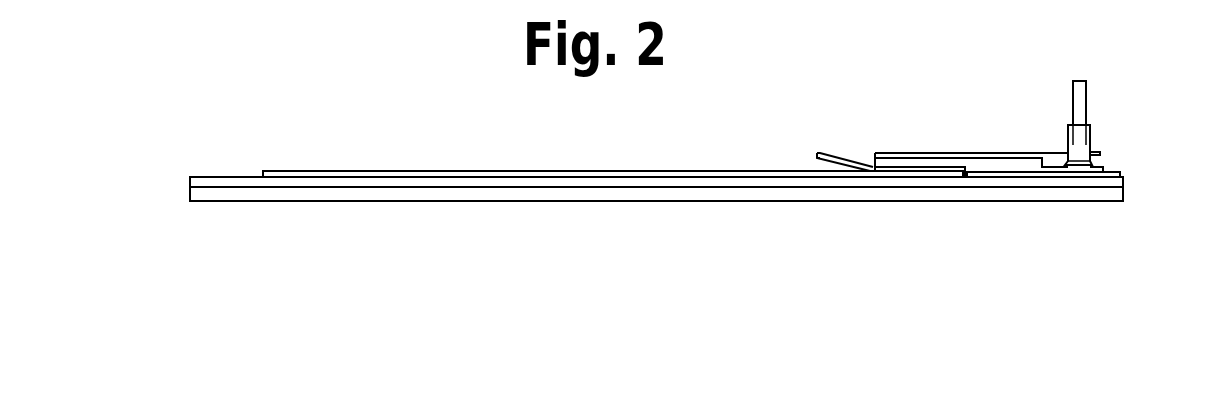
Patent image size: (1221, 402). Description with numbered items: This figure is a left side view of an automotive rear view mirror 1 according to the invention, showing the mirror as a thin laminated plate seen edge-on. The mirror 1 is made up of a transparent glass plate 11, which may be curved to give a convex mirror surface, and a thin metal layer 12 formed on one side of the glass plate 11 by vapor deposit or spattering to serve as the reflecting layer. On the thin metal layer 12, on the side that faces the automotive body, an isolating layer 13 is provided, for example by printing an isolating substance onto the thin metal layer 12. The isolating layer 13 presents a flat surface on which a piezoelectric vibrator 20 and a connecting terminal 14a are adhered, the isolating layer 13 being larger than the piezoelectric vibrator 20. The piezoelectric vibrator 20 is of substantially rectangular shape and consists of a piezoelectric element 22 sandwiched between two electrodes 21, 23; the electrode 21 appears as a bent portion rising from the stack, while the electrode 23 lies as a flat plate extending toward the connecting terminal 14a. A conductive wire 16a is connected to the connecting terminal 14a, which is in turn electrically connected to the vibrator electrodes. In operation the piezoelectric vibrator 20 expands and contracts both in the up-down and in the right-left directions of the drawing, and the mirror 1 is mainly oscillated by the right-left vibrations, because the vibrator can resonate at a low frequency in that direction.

The mirror 1 is at (150, 122).
The transparent glass plate 11 is at (194, 193).
The thin metal layer 12 is at (196, 181).
The isolating layer 13 is at (1025, 176).
The piezoelectric vibrator 20 is at (913, 93).
The electrode 21 is at (817, 153).
The piezoelectric element 22 is at (873, 158).
The electrode 23 is at (907, 153).
The connecting terminal 14a is at (1086, 138).
The conductive wire 16a is at (1085, 93).